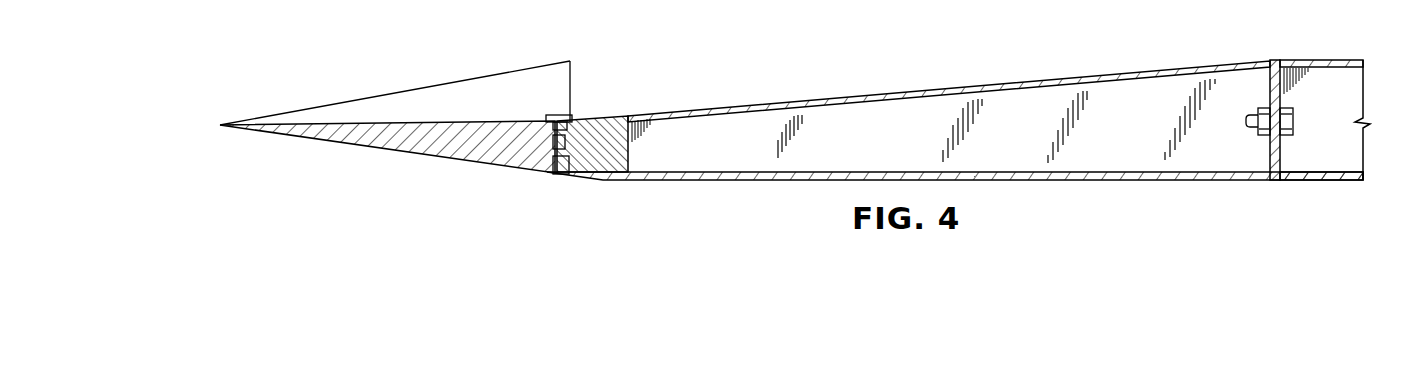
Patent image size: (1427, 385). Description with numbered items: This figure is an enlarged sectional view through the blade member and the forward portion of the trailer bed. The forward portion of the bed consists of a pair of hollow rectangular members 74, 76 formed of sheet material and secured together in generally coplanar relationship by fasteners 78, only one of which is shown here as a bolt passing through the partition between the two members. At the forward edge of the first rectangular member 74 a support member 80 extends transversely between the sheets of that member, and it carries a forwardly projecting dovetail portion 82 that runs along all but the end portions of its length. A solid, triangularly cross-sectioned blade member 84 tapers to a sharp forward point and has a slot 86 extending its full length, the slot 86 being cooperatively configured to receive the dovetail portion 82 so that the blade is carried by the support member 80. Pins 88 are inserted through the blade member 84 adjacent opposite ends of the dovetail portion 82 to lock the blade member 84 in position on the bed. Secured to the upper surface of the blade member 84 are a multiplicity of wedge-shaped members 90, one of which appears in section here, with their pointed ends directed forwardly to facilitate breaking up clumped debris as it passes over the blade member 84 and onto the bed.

The hollow rectangular member 74 is at (878, 93).
The hollow rectangular member 76 is at (1313, 61).
The fastener 78 is at (1295, 118).
The support member 80 is at (640, 144).
The dovetail portion 82 is at (555, 163).
The blade member 84 is at (374, 154).
The slot 86 is at (556, 143).
The pin 88 is at (556, 116).
The wedge-shaped member 90 is at (401, 93).